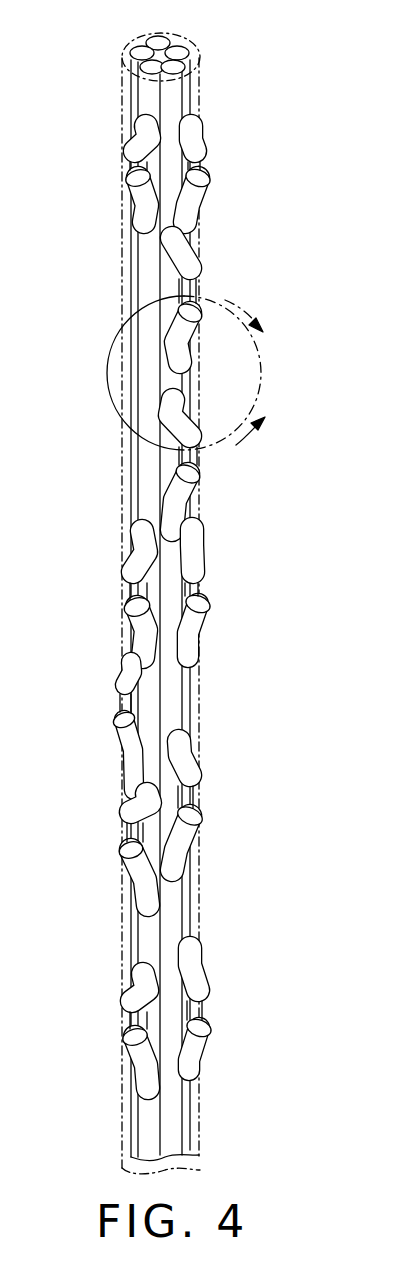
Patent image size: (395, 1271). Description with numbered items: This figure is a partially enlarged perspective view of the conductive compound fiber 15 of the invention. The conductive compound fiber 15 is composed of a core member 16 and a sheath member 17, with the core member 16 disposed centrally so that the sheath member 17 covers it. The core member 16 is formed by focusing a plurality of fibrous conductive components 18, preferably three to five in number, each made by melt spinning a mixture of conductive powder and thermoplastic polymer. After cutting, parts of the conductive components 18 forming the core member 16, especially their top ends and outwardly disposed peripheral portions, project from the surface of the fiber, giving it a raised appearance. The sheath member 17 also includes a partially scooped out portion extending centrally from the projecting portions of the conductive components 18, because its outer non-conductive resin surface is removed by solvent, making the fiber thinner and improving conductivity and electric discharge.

The conductive compound fiber 15 is at (100, 424).
The core member 16 is at (195, 38).
The sheath member 17 is at (200, 1166).
The fibrous conductive component 18 is at (208, 602).